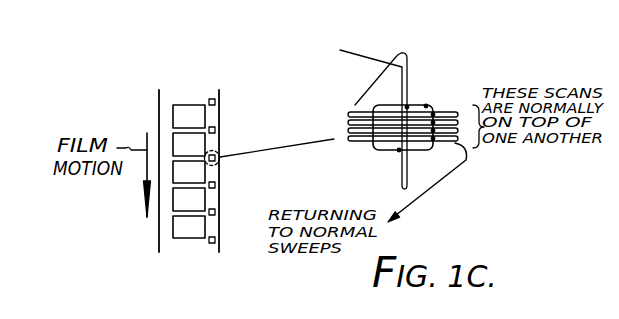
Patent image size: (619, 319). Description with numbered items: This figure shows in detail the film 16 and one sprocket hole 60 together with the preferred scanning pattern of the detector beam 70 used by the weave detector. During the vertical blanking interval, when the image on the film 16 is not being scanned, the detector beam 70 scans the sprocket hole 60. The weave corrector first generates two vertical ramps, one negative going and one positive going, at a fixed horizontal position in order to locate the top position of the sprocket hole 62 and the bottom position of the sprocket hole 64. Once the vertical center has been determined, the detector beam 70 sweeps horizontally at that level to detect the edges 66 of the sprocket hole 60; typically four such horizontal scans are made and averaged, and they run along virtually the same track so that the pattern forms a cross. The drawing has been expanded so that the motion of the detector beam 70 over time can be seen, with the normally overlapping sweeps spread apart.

The film 16 is at (218, 203).
The sprocket hole 60 is at (219, 151).
The top position of the sprocket hole 62 is at (399, 150).
The bottom position of the sprocket hole 64 is at (407, 107).
The edges of the sprocket hole 66 is at (374, 111).
The detector beam 70 is at (403, 113).